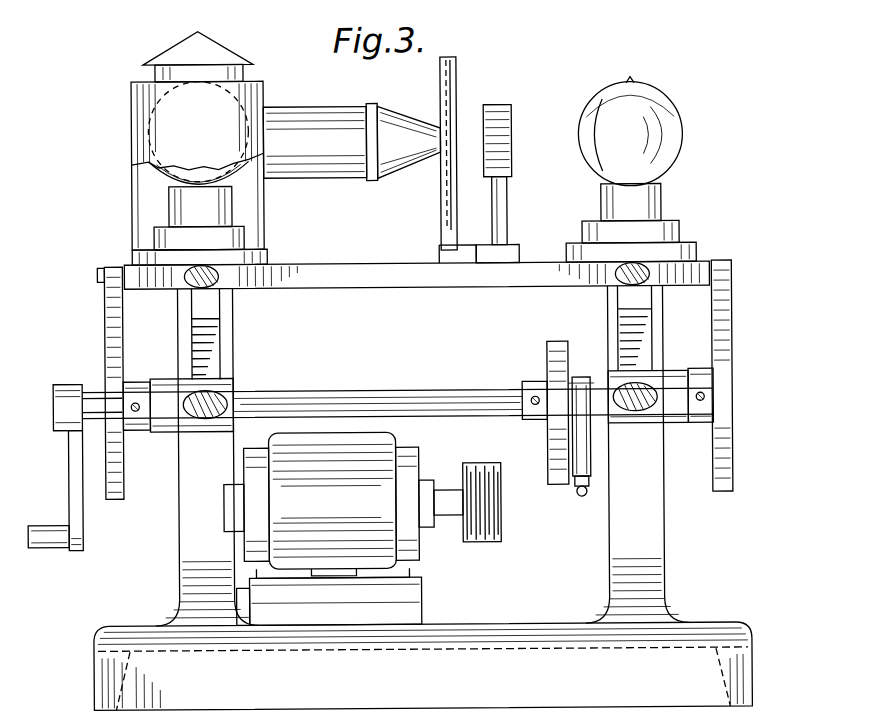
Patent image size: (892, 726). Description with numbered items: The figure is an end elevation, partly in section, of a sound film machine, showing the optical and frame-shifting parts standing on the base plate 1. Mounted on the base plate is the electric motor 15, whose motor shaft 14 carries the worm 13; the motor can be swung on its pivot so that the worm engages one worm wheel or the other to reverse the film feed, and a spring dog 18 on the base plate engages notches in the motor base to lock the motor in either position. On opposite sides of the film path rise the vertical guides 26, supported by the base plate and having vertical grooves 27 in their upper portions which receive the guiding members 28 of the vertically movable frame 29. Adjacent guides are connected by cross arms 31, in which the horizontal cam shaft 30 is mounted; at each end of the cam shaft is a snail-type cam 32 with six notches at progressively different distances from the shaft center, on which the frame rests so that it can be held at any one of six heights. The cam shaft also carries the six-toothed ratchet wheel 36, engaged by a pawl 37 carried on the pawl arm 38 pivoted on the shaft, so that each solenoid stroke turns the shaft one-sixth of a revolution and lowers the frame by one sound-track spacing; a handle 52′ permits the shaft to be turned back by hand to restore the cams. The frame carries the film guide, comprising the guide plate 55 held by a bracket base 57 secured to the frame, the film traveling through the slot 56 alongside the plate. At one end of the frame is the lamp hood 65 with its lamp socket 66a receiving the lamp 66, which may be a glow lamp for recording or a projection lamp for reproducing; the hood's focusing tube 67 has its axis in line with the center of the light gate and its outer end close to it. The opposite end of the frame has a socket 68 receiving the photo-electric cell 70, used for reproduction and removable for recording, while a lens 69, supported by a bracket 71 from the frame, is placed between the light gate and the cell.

The base plate 1 is at (697, 630).
The worm 13 is at (500, 531).
The motor shaft 14 is at (446, 491).
The electric motor 15 is at (328, 505).
The spring dog 18 is at (256, 605).
The vertical guide 26 is at (178, 515).
The vertical groove 27 is at (212, 364).
The guiding member 28 is at (213, 306).
The vertically movable frame 29 is at (398, 281).
The cam shaft 30 is at (380, 391).
The cross arm 31 is at (230, 395).
The cam 32 is at (117, 498).
The ratchet wheel 36 is at (561, 362).
The pawl 37 is at (548, 462).
The pawl arm 38 is at (586, 456).
The handle 52′ is at (47, 547).
The guide plate 55 is at (458, 80).
The slot 56 is at (444, 70).
The bracket base 57 is at (473, 248).
The lamp hood 65 is at (134, 122).
The lamp 66 is at (168, 172).
The lamp socket 66a is at (168, 228).
The focusing tube 67 is at (313, 110).
The socket 68 is at (679, 232).
The lens 69 is at (513, 121).
The photo-electric cell 70 is at (675, 125).
The bracket 71 is at (508, 205).